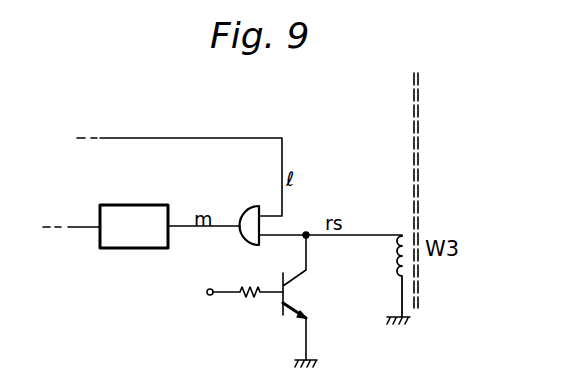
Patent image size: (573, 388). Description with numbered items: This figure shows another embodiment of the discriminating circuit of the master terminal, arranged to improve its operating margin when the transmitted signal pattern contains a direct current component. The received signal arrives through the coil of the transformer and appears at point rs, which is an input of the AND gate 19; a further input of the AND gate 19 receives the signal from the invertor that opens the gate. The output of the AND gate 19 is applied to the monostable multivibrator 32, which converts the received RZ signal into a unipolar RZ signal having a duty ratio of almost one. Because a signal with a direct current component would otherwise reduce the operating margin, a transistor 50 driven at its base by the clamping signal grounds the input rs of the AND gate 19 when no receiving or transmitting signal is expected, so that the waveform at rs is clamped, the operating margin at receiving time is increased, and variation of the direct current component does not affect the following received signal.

The monostable multivibrator MM 32 is at (121, 250).
The AND gate A3 19 is at (242, 246).
The transistor 50 is at (303, 295).